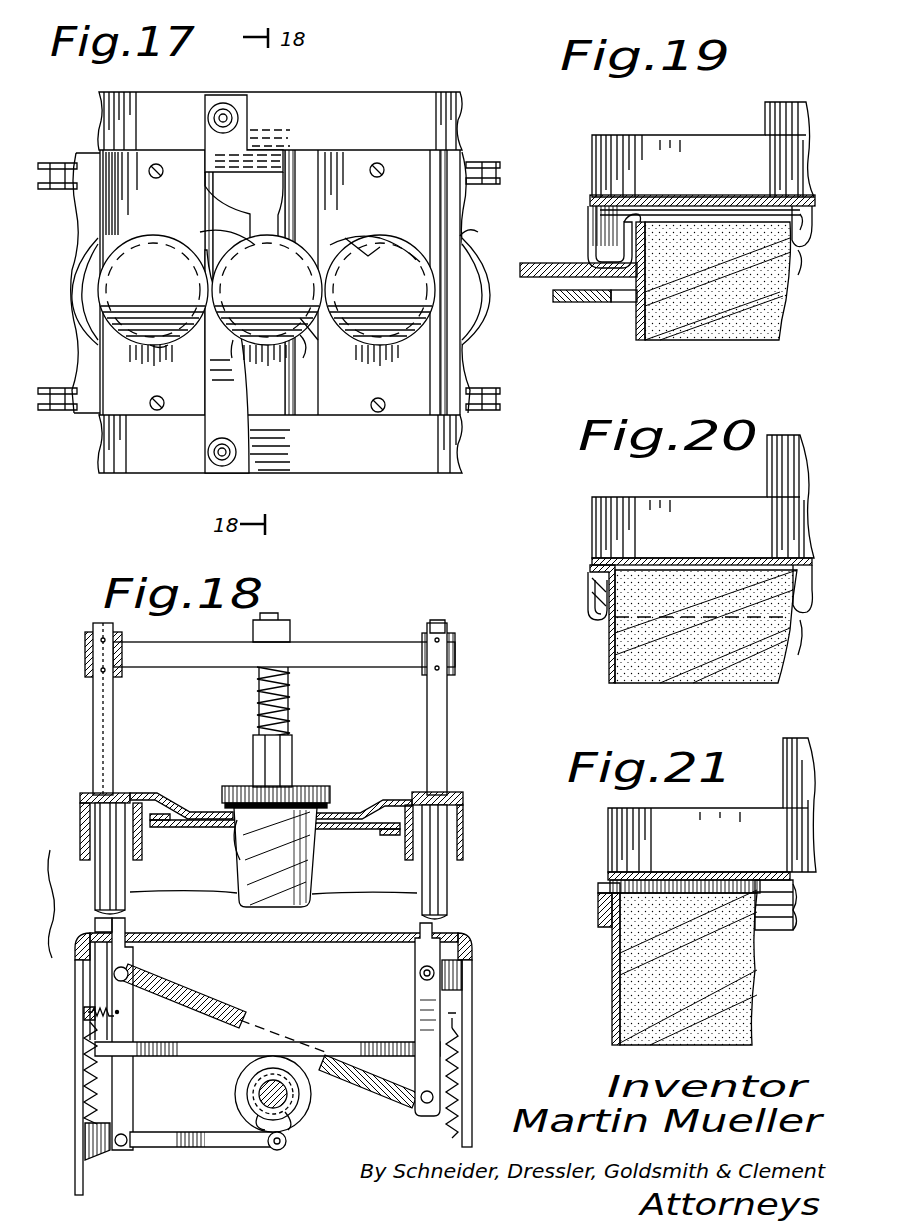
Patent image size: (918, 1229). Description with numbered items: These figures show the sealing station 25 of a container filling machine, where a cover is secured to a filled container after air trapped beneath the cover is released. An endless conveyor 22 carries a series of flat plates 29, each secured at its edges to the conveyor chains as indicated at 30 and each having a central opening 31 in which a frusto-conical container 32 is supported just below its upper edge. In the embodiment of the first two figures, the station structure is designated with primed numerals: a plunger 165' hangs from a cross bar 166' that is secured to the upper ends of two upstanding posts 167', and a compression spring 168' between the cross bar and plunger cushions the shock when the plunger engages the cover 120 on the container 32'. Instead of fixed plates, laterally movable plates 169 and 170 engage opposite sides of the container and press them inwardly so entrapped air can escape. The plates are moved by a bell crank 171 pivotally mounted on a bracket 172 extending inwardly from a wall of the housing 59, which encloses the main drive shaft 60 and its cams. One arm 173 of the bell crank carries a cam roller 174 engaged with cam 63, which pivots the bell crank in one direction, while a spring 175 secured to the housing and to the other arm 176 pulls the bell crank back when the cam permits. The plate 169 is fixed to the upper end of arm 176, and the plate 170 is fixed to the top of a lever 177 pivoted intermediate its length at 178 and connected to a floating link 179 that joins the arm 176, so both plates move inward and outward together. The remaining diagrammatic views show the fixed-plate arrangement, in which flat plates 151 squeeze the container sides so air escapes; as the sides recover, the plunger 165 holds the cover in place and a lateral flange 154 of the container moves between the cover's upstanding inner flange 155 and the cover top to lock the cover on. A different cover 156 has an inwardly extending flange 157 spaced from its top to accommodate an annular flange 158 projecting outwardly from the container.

In FIG. 17, the endless conveyor 22 is at (50, 163).
In FIG. 17, the sealing station 25 is at (341, 89).
In FIG. 17, the flat plate 29 is at (115, 213).
In FIG. 19, the flat plate 29 is at (570, 302).
In FIG. 18, the flat plate 29 is at (192, 830).
In FIG. 17, the securing point of plate to chains 30 is at (163, 178).
In FIG. 18, the securing point of plate to chains 30 is at (370, 834).
In FIG. 17, the opening 31 is at (285, 342).
In FIG. 19, the opening 31 is at (625, 302).
In FIG. 18, the opening 31 is at (245, 852).
In FIG. 17, the container 32 is at (261, 287).
In FIG. 19, the container 32 is at (693, 307).
In FIG. 20, the container 32 is at (671, 624).
In FIG. 21, the container 32 is at (651, 967).
In FIG. 18, the container 32 is at (273, 857).
In FIG. 17, the container 32' is at (165, 355).
In FIG. 18, the housing 59 is at (472, 1040).
In FIG. 18, the main drive shaft 60 is at (312, 1100).
In FIG. 18, the cam 63 is at (254, 1097).
In FIG. 17, the cover 120 is at (370, 245).
In FIG. 19, the cover 120 is at (678, 195).
In FIG. 20, the cover 120 is at (672, 558).
In FIG. 18, the cover 120 is at (325, 790).
In FIG. 19, the flat plate 151 is at (536, 263).
In FIG. 19, the flange 154 is at (630, 250).
In FIG. 20, the flange 154 is at (590, 587).
In FIG. 19, the upstanding inner flange 155 is at (590, 225).
In FIG. 20, the upstanding inner flange 155 is at (592, 617).
In FIG. 21, the cover 156 is at (660, 880).
In FIG. 21, the inwardly extending flange 157 is at (755, 887).
In FIG. 21, the annular flange 158 is at (598, 897).
In FIG. 19, the plunger 165 is at (703, 146).
In FIG. 20, the plunger 165 is at (703, 496).
In FIG. 21, the plunger 165 is at (712, 805).
In FIG. 18, the plunger 165' is at (306, 748).
In FIG. 18, the cross bar 166' is at (284, 631).
In FIG. 17, the post 167' is at (208, 284).
In FIG. 18, the post 167' is at (298, 707).
In FIG. 18, the compression spring 168' is at (241, 676).
In FIG. 17, the laterally movable plate 169 is at (230, 233).
In FIG. 18, the laterally movable plate 169 is at (360, 815).
In FIG. 17, the laterally movable plate 170 is at (320, 347).
In FIG. 18, the laterally movable plate 170 is at (192, 808).
In FIG. 18, the bell crank 171 is at (94, 1086).
In FIG. 18, the bracket 172 is at (108, 1172).
In FIG. 18, the arm 173 is at (195, 1150).
In FIG. 18, the cam roller 174 is at (287, 1143).
In FIG. 18, the spring 175 is at (88, 1004).
In FIG. 18, the arm 176 is at (130, 1067).
In FIG. 18, the lever 177 is at (416, 1012).
In FIG. 18, the pivot 178 is at (419, 977).
In FIG. 18, the floating link 179 is at (225, 982).